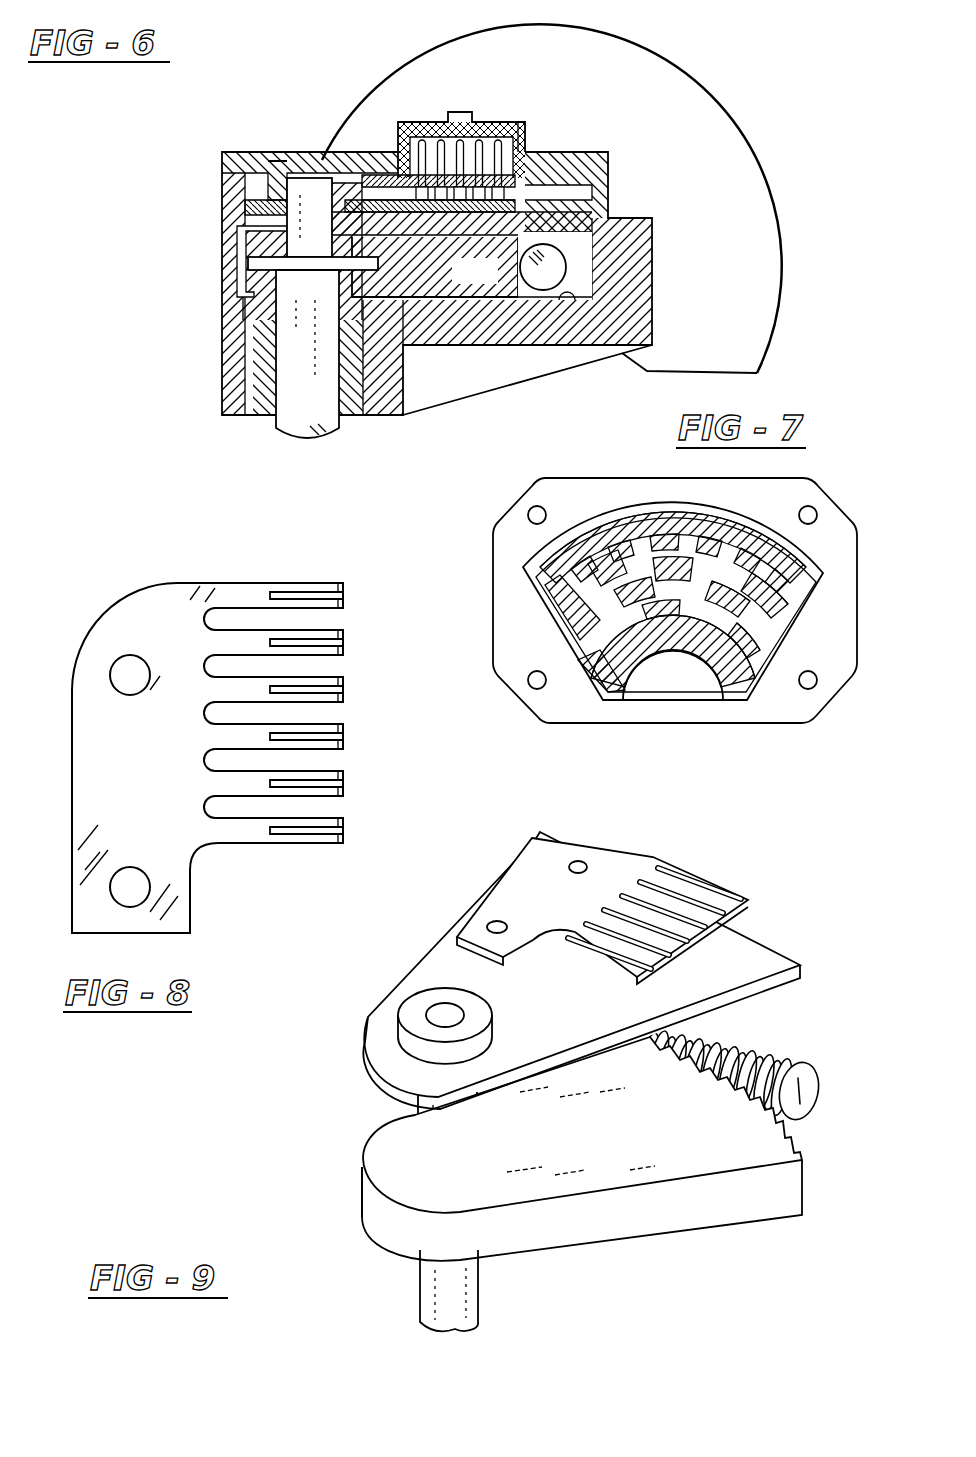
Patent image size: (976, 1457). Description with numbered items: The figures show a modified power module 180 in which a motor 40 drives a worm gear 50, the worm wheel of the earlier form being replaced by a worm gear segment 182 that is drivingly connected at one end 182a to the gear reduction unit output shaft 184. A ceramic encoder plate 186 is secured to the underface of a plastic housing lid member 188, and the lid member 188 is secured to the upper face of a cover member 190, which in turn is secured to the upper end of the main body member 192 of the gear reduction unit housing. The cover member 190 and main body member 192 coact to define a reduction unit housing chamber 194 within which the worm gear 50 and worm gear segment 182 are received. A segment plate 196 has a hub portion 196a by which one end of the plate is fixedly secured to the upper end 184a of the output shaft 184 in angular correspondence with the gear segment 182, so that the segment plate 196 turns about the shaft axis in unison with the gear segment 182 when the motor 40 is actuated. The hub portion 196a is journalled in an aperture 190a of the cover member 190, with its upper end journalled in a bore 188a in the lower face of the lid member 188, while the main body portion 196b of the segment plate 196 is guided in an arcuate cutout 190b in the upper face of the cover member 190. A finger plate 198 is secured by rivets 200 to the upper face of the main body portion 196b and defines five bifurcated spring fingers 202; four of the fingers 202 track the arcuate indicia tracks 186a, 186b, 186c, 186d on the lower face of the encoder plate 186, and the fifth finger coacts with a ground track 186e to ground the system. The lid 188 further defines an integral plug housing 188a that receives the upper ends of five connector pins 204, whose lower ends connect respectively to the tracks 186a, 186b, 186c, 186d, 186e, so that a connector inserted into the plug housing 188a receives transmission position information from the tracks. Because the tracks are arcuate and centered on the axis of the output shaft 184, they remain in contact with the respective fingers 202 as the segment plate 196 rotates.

In FIG. 6, the motor 40 is at (732, 94).
In FIG. 6, the worm gear 50 is at (553, 265).
In FIG. 9, the worm gear 50 is at (818, 1081).
In FIG. 6, the power module 180 is at (192, 143).
In FIG. 6, the worm gear segment 182 is at (494, 283).
In FIG. 9, the worm gear segment 182 is at (690, 1134).
In FIG. 9, the end of worm gear segment 182a is at (380, 1209).
In FIG. 6, the gear reduction unit output shaft 184 is at (345, 425).
In FIG. 9, the gear reduction unit output shaft 184 is at (437, 1298).
In FIG. 9, the upper end of output shaft 184a is at (446, 1008).
In FIG. 6, the ceramic encoder plate 186 is at (380, 150).
In FIG. 7, the ceramic encoder plate 186 is at (505, 585).
In FIG. 7, the indicia track 186a is at (812, 580).
In FIG. 7, the indicia track 186b is at (792, 628).
In FIG. 7, the indicia track 186c is at (773, 640).
In FIG. 7, the indicia track 186d is at (768, 665).
In FIG. 7, the ground track 186e is at (733, 692).
In FIG. 6, the housing lid member 188 is at (277, 151).
In FIG. 6, the plug housing 188a is at (268, 161).
In FIG. 6, the cover member 190 is at (222, 201).
In FIG. 6, the aperture 190a is at (240, 229).
In FIG. 6, the arcuate cutout 190b is at (510, 196).
In FIG. 6, the main body member 192 is at (222, 313).
In FIG. 6, the reduction unit housing chamber 194 is at (566, 302).
In FIG. 9, the segment plate 196 is at (770, 925).
In FIG. 6, the hub portion 196a is at (313, 151).
In FIG. 9, the hub portion 196a is at (486, 1012).
In FIG. 6, the main body portion 196b is at (398, 206).
In FIG. 9, the main body portion 196b is at (626, 1026).
In FIG. 8, the finger plate 198 is at (162, 749).
In FIG. 9, the finger plate 198 is at (544, 890).
In FIG. 9, the rivets 200 is at (578, 861).
In FIG. 8, the bifurcated spring fingers 202 is at (298, 582).
In FIG. 9, the bifurcated spring fingers 202 is at (683, 867).
In FIG. 6, the connector pins 204 is at (480, 135).